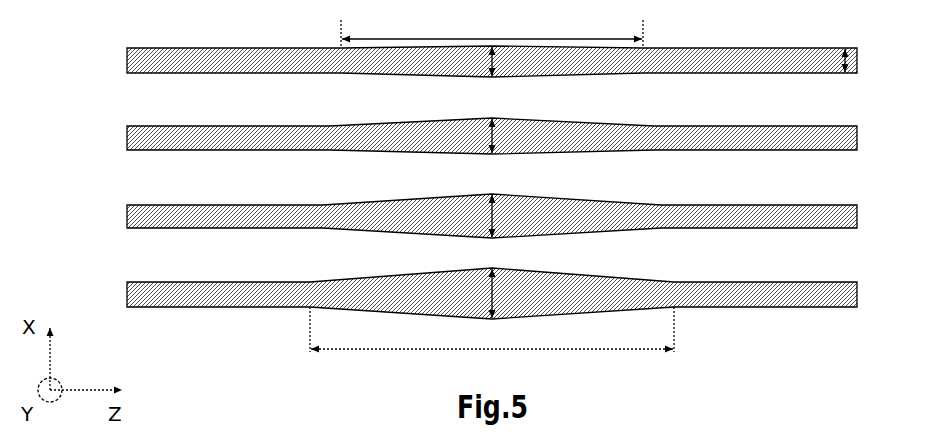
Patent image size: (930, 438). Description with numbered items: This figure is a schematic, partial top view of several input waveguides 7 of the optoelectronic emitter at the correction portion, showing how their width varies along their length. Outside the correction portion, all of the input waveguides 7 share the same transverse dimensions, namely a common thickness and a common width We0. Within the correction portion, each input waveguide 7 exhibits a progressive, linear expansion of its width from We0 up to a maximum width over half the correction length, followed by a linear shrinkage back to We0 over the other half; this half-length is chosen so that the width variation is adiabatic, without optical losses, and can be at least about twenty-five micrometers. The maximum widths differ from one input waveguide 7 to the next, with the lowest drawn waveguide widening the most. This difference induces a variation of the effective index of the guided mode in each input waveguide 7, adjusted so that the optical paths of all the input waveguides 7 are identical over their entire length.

The input waveguide 7 is at (126, 282).
The width of the input waveguides outside the correction portion We0 is at (876, 64).